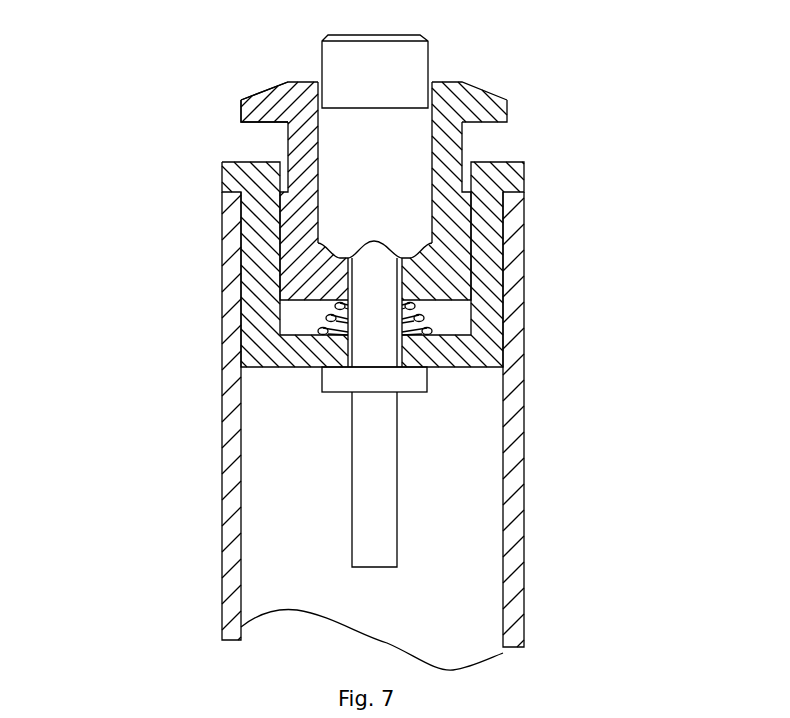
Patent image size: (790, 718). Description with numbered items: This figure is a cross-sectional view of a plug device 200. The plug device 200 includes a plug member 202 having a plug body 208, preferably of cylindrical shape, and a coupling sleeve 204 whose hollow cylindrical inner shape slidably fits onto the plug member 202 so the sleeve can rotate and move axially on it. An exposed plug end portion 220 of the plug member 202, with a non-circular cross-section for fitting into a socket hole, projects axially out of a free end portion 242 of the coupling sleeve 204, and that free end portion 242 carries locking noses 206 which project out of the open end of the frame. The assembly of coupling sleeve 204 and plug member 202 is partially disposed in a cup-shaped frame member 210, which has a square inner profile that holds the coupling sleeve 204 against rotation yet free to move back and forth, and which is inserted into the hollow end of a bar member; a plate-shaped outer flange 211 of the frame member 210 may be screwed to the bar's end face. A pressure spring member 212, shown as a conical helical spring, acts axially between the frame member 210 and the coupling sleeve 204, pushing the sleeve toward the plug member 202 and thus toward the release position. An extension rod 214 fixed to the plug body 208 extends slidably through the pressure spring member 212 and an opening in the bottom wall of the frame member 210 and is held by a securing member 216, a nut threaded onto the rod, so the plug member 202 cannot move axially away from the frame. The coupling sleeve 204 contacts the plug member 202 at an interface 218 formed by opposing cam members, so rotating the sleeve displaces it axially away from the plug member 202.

The plug device 200 is at (524, 57).
The plug member 202 is at (293, 55).
The coupling sleeve 204 is at (456, 142).
The locking noses 206 is at (490, 93).
The plug body 208 is at (380, 228).
The frame member 210 is at (483, 250).
The plate-shaped outer flange 211 is at (524, 183).
The pressure spring member 212 is at (317, 328).
The extension rod 214 is at (381, 448).
The securing member 216 is at (330, 385).
The interface 218 is at (405, 283).
The exposed plug end portion 220 is at (405, 63).
The free end portion 242 is at (303, 97).